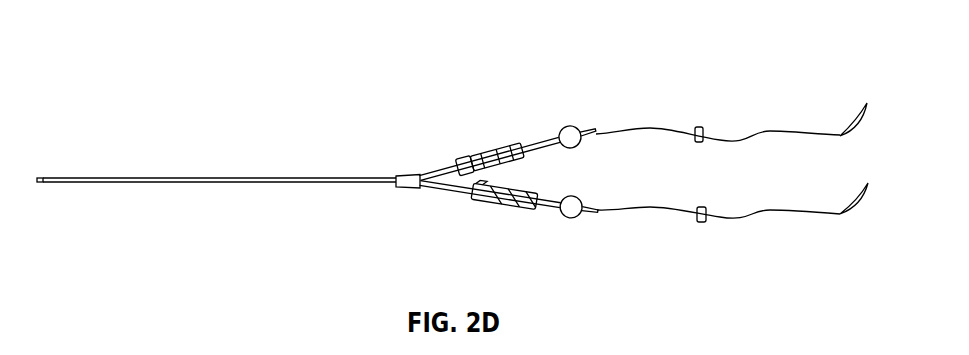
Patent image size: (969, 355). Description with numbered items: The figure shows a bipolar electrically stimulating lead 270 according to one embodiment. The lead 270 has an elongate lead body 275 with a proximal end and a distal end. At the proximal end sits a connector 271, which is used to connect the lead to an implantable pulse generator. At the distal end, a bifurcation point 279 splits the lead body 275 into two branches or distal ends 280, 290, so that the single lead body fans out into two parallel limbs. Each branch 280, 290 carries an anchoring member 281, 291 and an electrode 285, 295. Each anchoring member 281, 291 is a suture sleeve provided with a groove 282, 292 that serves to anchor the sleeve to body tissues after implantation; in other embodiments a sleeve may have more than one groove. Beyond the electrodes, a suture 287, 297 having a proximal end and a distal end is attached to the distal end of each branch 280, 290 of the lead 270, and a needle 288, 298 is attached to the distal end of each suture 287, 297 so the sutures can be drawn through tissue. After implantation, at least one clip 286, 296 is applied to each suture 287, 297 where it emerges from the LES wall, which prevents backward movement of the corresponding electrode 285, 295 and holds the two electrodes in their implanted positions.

The bipolar electrically stimulating lead 270 is at (216, 54).
The connector 271 is at (39, 178).
The elongate lead body 275 is at (232, 178).
The bifurcation point 279 is at (402, 176).
The branch 280 is at (437, 168).
The anchoring member 281 is at (512, 148).
The groove 282 is at (467, 157).
The electrode 285 is at (574, 128).
The clip 286 is at (699, 128).
The suture 287 is at (765, 130).
The needle 288 is at (857, 116).
The branch 290 is at (442, 193).
The anchoring member 291 is at (530, 212).
The groove 292 is at (492, 203).
The electrode 295 is at (571, 214).
The clip 296 is at (701, 223).
The suture 297 is at (765, 212).
The needle 298 is at (857, 198).